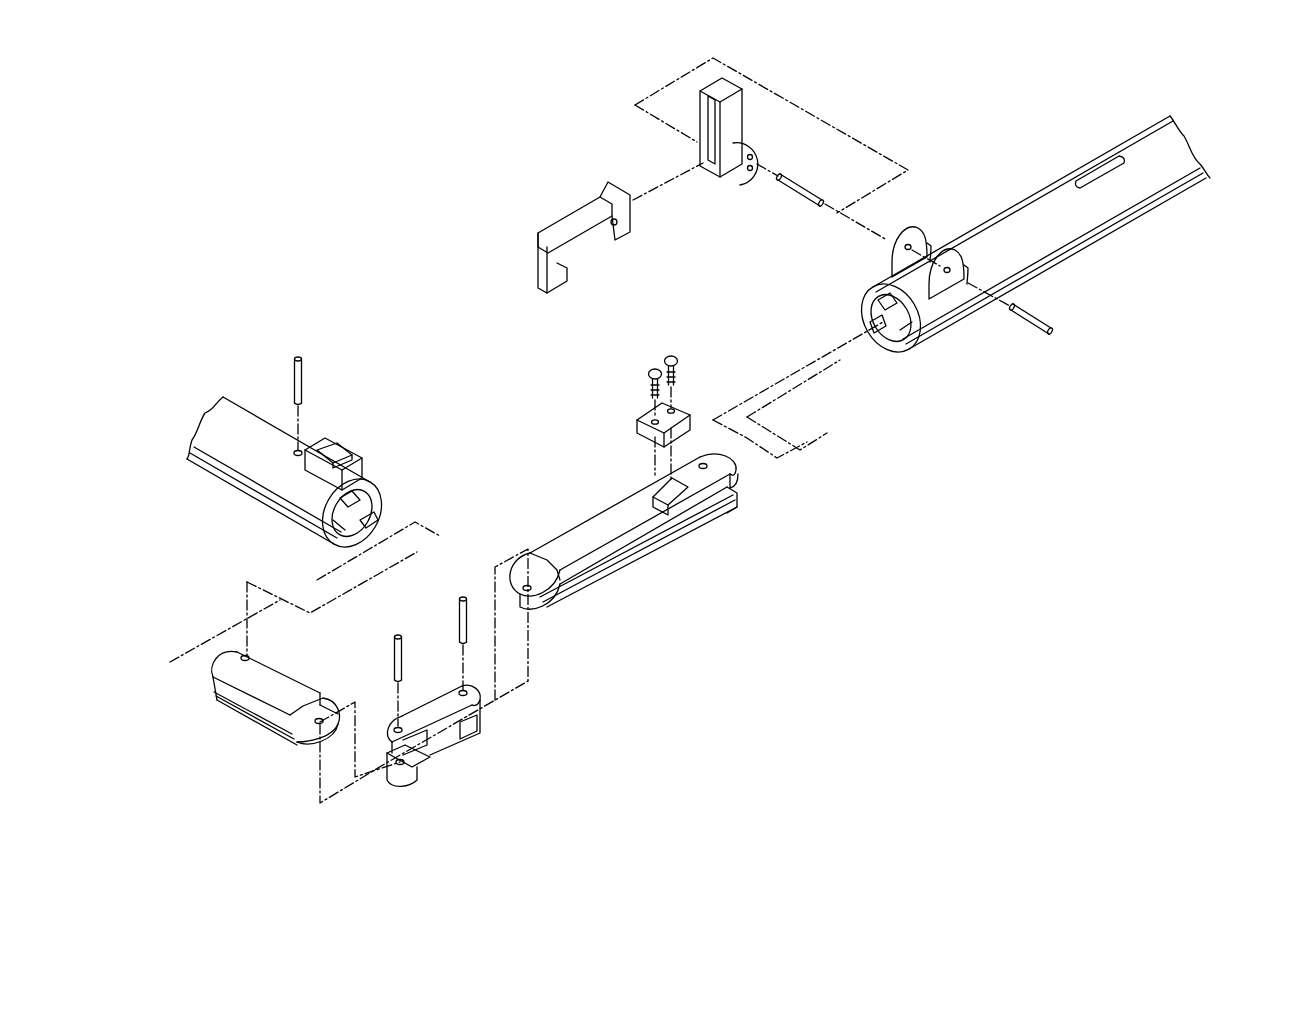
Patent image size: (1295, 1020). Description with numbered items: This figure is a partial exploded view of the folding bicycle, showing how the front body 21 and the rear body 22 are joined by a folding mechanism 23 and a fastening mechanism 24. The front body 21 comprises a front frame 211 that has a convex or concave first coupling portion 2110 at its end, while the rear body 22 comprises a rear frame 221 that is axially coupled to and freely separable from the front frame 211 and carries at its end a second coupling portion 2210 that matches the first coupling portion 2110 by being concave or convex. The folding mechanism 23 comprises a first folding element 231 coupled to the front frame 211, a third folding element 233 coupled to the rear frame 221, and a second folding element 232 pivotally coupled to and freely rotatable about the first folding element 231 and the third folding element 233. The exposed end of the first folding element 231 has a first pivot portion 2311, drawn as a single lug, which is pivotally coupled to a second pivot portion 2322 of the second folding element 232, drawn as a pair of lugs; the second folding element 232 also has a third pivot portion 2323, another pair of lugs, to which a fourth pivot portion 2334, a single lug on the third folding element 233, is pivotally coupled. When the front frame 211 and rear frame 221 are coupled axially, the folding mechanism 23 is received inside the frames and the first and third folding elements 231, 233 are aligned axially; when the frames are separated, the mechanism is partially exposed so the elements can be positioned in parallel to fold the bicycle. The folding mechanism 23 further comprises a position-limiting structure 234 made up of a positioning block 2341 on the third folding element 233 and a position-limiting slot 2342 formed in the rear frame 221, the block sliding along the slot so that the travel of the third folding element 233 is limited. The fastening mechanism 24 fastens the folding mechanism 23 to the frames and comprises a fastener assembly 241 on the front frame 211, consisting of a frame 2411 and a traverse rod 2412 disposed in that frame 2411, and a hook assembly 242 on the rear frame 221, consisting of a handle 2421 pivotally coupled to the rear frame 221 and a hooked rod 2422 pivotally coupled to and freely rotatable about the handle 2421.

The front body 21 is at (241, 372).
The front frame 211 is at (260, 437).
The first coupling portion 2110 is at (383, 513).
The rear body 22 is at (1017, 162).
The rear frame 221 is at (1128, 218).
The second coupling portion 2210 is at (878, 346).
The folding mechanism 23 is at (228, 848).
The first folding element 231 is at (272, 730).
The first pivot portion 2311 is at (313, 737).
The second folding element 232 is at (443, 750).
The second pivot portion 2322 is at (400, 768).
The third pivot portion 2323 is at (474, 735).
The third folding element 233 is at (653, 552).
The fourth pivot portion 2334 is at (535, 608).
The position-limiting structure 234 is at (1075, 404).
The positioning block 2341 is at (722, 462).
The position-limiting slot 2342 is at (1078, 181).
The fastening mechanism 24 is at (380, 65).
The fastener assembly 241 is at (320, 158).
The frame 2411 is at (333, 440).
The traverse rod 2412 is at (352, 460).
The hook assembly 242 is at (468, 118).
The handle 2421 is at (705, 147).
The hooked rod 2422 is at (576, 220).